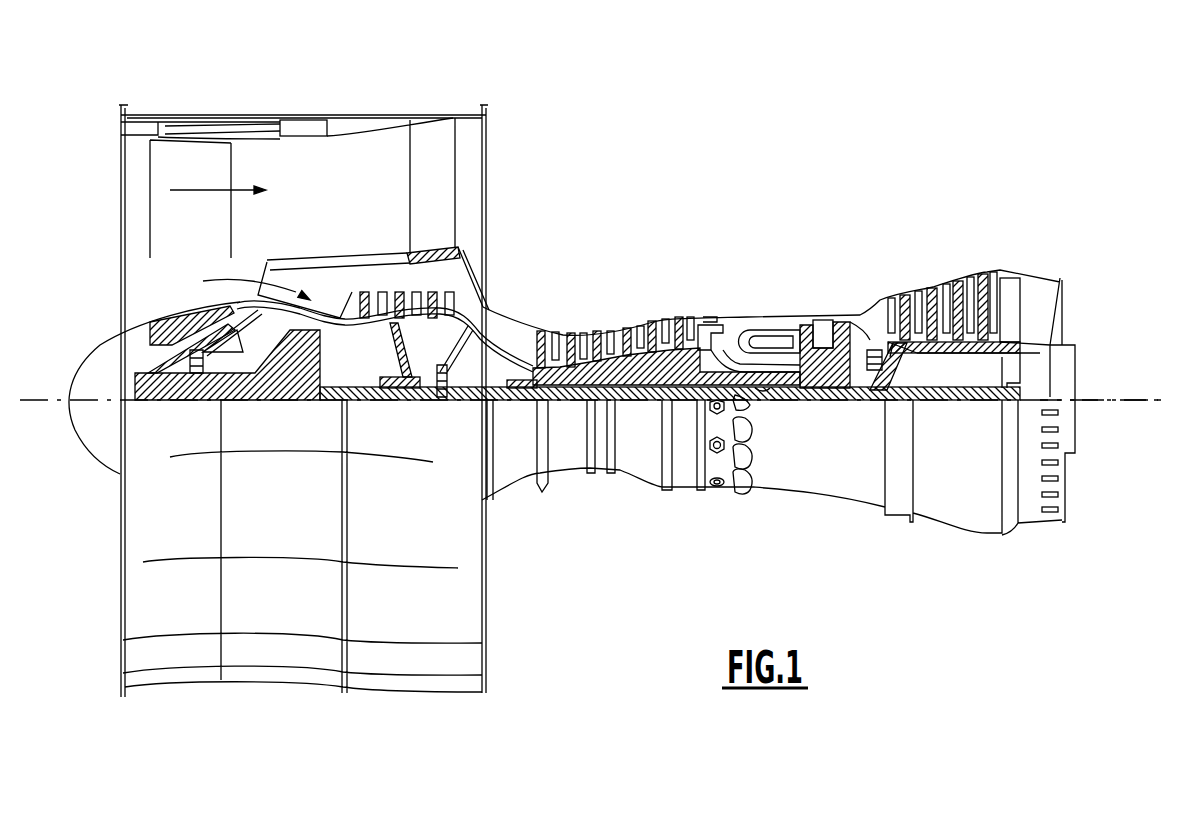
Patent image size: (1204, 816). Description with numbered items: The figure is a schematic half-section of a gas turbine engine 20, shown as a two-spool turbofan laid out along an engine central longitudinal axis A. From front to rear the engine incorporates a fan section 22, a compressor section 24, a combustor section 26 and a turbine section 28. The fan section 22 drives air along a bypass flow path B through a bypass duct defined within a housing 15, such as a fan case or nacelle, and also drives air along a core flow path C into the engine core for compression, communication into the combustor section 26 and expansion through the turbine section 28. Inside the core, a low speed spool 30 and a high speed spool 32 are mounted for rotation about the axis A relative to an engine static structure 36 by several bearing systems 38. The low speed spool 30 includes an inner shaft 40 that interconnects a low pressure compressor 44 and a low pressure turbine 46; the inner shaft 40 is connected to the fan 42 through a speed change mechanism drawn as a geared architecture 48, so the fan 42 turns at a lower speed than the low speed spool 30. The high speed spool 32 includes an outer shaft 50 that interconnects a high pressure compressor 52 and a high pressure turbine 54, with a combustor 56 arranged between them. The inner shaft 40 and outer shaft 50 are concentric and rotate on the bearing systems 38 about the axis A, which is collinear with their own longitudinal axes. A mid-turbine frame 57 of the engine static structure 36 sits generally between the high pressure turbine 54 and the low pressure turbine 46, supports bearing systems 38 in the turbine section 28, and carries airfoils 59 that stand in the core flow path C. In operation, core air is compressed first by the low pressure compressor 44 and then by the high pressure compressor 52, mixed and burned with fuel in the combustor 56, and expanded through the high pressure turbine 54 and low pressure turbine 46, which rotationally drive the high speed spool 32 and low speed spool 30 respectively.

The housing 15 is at (303, 120).
The gas turbine engine 20 is at (768, 157).
The fan section 22 is at (233, 108).
The compressor section 24 is at (539, 299).
The combustor section 26 is at (764, 289).
The turbine section 28 is at (910, 248).
The low speed spool 30 is at (642, 414).
The high speed spool 32 is at (678, 362).
The engine static structure 36 is at (682, 499).
The bearing systems 38 is at (443, 398).
The inner shaft 40 is at (503, 400).
The fan 42 is at (205, 244).
The low pressure compressor 44 is at (350, 298).
The low pressure turbine 46 is at (952, 283).
The geared architecture 48 is at (308, 385).
The outer shaft 50 is at (766, 392).
The high pressure compressor 52 is at (620, 332).
The high pressure turbine 54 is at (823, 320).
The combustor 56 is at (758, 345).
The mid-turbine frame 57 is at (869, 295).
The airfoils 59 is at (890, 358).
The engine central longitudinal axis A is at (1155, 398).
The bypass flow path B is at (205, 188).
The core flow path C is at (247, 282).